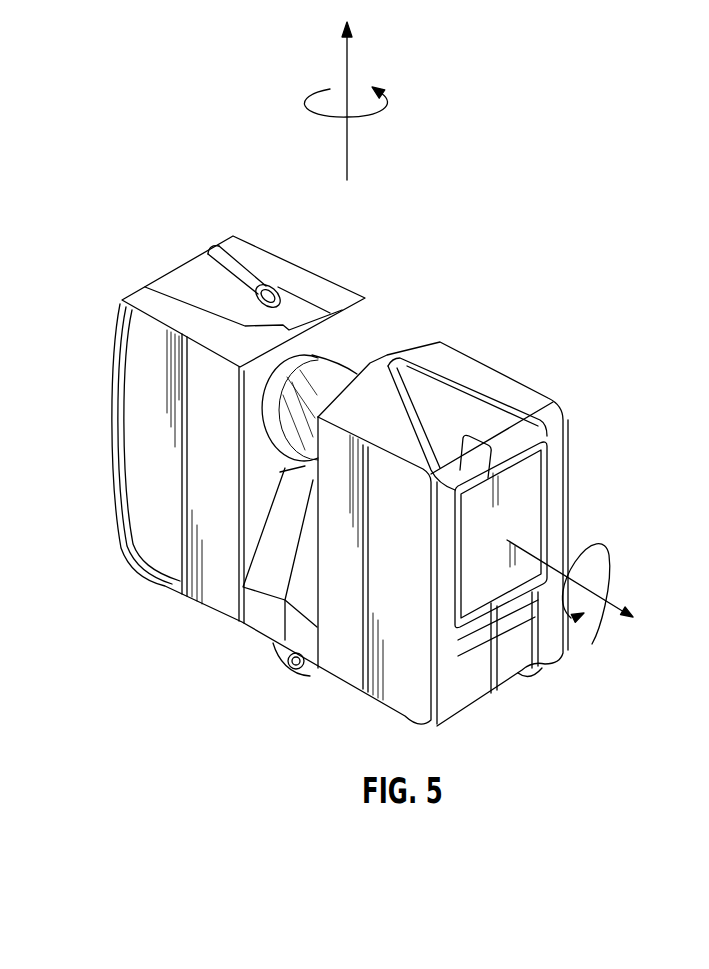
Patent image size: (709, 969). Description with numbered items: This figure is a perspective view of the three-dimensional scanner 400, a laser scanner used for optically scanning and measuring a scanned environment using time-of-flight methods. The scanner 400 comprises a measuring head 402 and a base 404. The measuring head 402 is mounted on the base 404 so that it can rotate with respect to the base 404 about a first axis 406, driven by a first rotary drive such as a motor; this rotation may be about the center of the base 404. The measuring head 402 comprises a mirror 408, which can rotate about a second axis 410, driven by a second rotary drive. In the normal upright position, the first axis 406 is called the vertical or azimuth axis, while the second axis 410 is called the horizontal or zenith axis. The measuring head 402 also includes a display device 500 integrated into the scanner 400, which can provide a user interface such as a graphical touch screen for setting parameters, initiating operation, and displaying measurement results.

The 3D scanner 400 is at (232, 162).
The measuring head 402 is at (604, 512).
The base 404 is at (303, 671).
The first axis 406 is at (349, 65).
The mirror 408 is at (340, 373).
The second axis 410 is at (570, 609).
The display device 500 is at (527, 494).